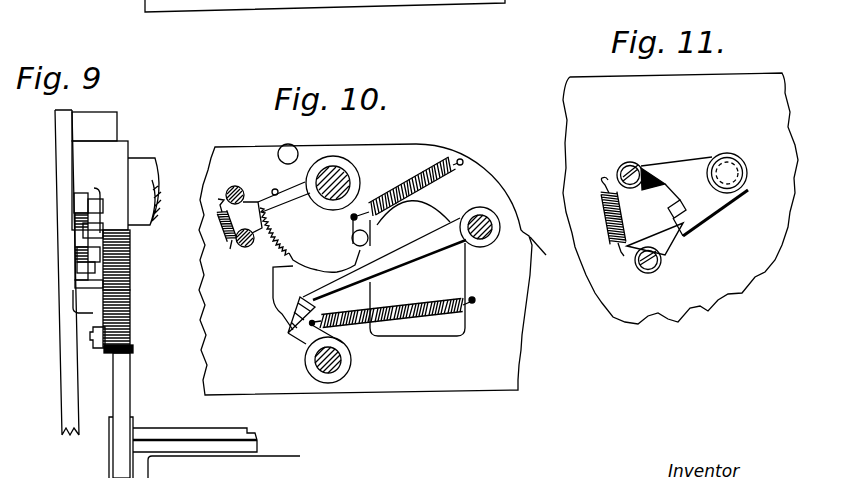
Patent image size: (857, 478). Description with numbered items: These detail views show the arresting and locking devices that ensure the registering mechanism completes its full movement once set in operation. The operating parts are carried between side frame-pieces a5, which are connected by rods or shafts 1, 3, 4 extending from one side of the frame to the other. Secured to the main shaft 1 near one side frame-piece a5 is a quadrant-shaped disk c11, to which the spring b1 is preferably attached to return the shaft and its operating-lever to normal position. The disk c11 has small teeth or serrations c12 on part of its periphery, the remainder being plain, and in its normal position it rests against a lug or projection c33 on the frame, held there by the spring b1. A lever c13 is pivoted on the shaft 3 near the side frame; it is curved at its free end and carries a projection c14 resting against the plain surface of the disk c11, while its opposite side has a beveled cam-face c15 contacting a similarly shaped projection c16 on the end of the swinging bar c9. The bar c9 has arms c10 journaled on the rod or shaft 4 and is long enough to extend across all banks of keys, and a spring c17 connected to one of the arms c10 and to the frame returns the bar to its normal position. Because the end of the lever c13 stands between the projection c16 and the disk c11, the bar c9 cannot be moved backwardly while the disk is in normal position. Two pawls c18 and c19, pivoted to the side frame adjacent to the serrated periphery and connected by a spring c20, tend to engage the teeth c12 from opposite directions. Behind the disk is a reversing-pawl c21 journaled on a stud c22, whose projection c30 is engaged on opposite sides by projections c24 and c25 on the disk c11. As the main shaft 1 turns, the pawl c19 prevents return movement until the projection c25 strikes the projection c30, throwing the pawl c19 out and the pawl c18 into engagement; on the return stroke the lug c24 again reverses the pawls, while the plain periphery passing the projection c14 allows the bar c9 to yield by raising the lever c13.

In FIG. 9, the main shaft 1 is at (147, 166).
In FIG. 10, the main shaft 1 is at (338, 172).
In FIG. 10, the shaft 3 is at (487, 222).
In FIG. 10, the rod or shaft 4 is at (351, 362).
In FIG. 9, the side frame-pieces a5 is at (58, 178).
In FIG. 10, the side frame-pieces a5 is at (480, 172).
In FIG. 11, the side frame-pieces a5 is at (680, 198).
In FIG. 10, the spring b1 is at (416, 178).
In FIG. 9, the swinging bar c9 is at (188, 438).
In FIG. 10, the swinging bar c9 is at (295, 325).
In FIG. 10, the arms c10 is at (308, 342).
In FIG. 9, the quadrant-shaped disk c11 is at (132, 267).
In FIG. 10, the quadrant-shaped disk c11 is at (329, 245).
In FIG. 9, the teeth or serrations c12 is at (132, 300).
In FIG. 10, the teeth or serrations c12 is at (280, 250).
In FIG. 9, the lever c13 is at (125, 385).
In FIG. 10, the lever c13 is at (384, 259).
In FIG. 9, the projection c14 is at (125, 363).
In FIG. 10, the projection c14 is at (272, 296).
In FIG. 10, the beveled cam-face c15 is at (296, 307).
In FIG. 9, the projection c16 is at (133, 424).
In FIG. 10, the projection c16 is at (362, 299).
In FIG. 10, the spring c17 is at (423, 318).
In FIG. 10, the pawl c18 is at (245, 193).
In FIG. 11, the pawl c18 is at (638, 162).
In FIG. 10, the pawl c19 is at (267, 222).
In FIG. 11, the pawl c19 is at (667, 252).
In FIG. 10, the spring c20 is at (222, 222).
In FIG. 11, the spring c20 is at (600, 220).
In FIG. 9, the reversing-pawl c21 is at (75, 203).
In FIG. 10, the reversing-pawl c21 is at (275, 195).
In FIG. 11, the reversing-pawl c21 is at (693, 168).
In FIG. 11, the stud c22 is at (730, 168).
In FIG. 9, the lug c24 is at (82, 231).
In FIG. 9, the projection c25 is at (100, 339).
In FIG. 9, the projection c30 is at (90, 265).
In FIG. 11, the projection c30 is at (690, 211).
In FIG. 9, the lug or projection c33 is at (85, 303).
In FIG. 10, the lug or projection c33 is at (372, 231).